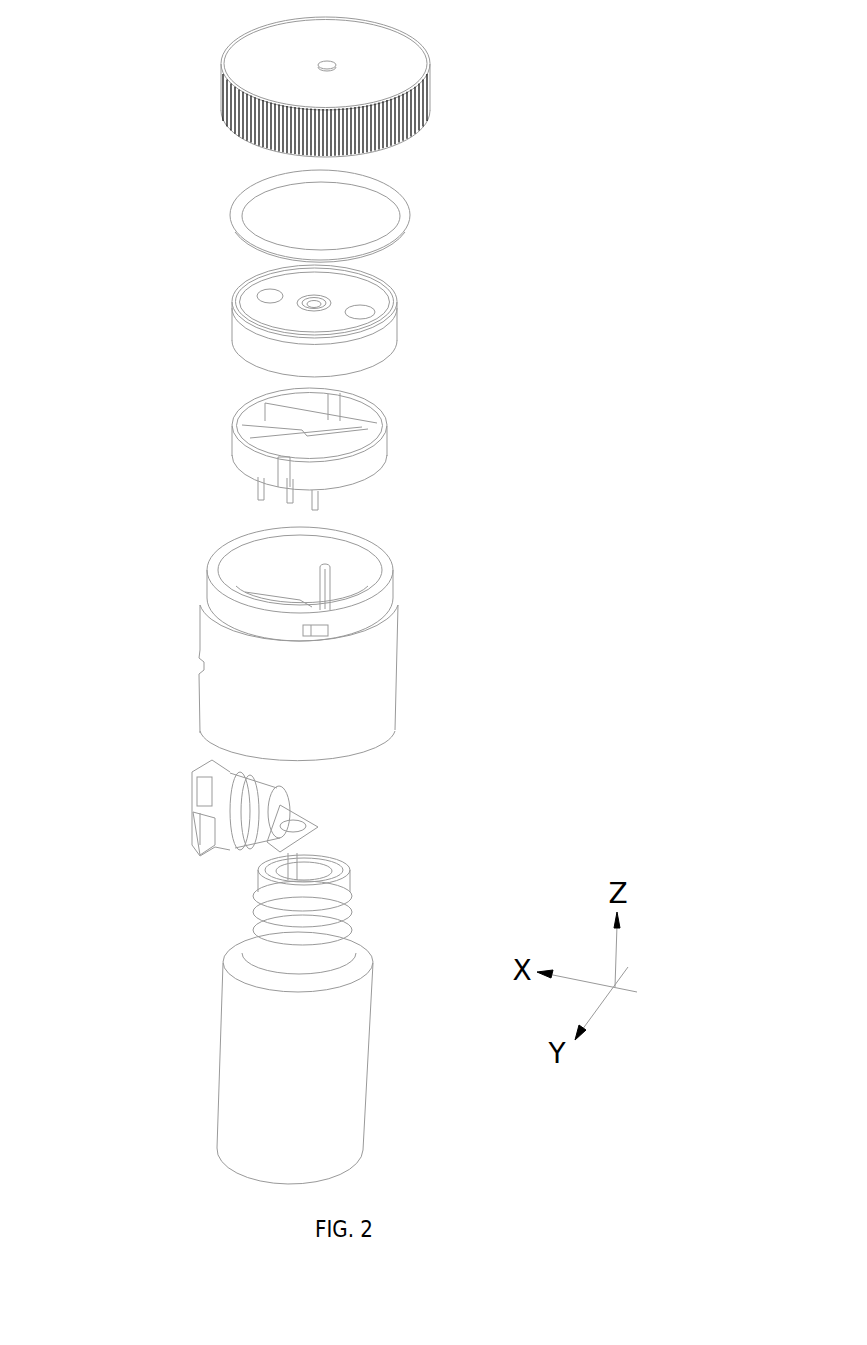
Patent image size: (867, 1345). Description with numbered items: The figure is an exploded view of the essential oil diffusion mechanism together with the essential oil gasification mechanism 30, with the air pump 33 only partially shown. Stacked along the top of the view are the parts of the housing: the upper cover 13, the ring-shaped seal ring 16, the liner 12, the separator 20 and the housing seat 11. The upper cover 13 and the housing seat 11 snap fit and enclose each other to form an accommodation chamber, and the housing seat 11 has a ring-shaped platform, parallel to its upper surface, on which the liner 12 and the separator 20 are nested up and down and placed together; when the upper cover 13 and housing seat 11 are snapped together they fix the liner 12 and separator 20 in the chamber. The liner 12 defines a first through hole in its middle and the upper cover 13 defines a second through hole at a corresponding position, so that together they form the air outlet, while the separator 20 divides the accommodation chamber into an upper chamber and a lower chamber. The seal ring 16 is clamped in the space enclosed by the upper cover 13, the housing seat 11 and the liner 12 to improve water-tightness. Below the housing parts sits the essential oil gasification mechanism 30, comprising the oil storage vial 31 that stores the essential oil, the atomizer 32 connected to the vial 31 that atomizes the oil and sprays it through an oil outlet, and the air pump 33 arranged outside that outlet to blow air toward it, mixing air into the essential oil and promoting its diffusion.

The housing seat 11 is at (383, 600).
The liner 12 is at (403, 340).
The upper cover 13 is at (423, 117).
The seal ring 16 is at (403, 223).
The separator 20 is at (240, 446).
The essential oil gasification mechanism 30 is at (100, 860).
The oil storage vial 31 is at (257, 1025).
The atomizer 32 is at (263, 873).
The air pump 33 is at (190, 848).